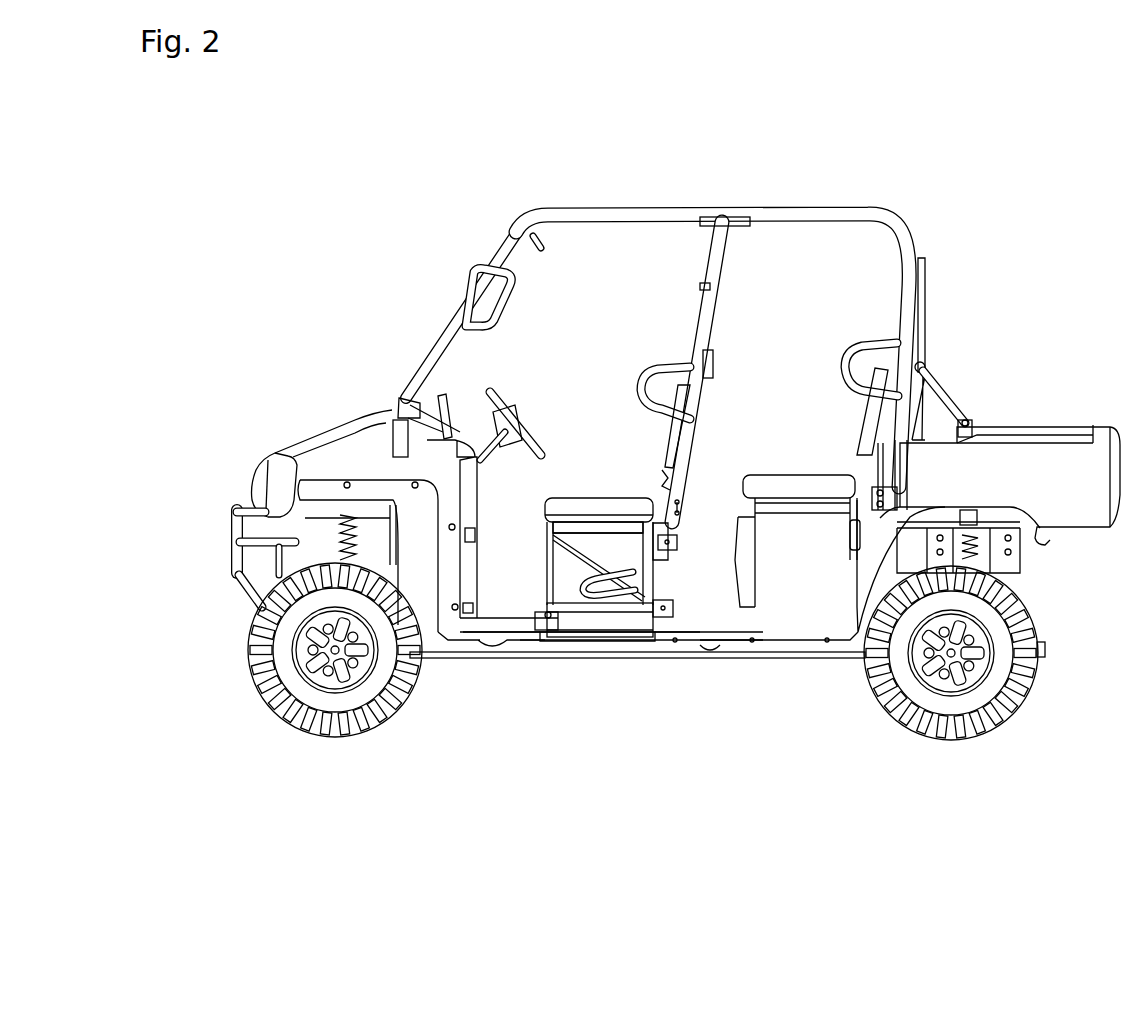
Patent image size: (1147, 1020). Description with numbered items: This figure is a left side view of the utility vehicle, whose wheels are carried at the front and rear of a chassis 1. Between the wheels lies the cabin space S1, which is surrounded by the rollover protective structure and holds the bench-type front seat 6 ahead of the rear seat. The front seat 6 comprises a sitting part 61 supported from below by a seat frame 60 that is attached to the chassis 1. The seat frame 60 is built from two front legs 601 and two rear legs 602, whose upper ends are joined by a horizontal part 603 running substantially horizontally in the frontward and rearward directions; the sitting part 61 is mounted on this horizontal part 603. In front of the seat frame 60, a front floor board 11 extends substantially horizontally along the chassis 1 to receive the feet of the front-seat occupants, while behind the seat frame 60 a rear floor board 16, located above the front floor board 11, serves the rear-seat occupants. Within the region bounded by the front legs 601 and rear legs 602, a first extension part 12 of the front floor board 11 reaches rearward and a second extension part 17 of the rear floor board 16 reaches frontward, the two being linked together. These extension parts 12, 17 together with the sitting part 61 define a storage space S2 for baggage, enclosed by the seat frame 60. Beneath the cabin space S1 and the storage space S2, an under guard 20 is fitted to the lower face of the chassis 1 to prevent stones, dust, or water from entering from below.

The chassis 1 is at (443, 672).
The front seat 6 is at (583, 487).
The seat frame 60 is at (548, 560).
The sitting part 61 is at (560, 507).
The front legs 601 is at (548, 560).
The rear legs 602 is at (654, 540).
The horizontal part 603 is at (593, 520).
The cabin space S1 is at (622, 277).
The storage space S2 is at (592, 597).
The front floor board 11 is at (507, 645).
The first extension part 12 is at (536, 645).
The rear floor board 16 is at (733, 643).
The second extension part 17 is at (687, 640).
The under guard 20 is at (795, 660).